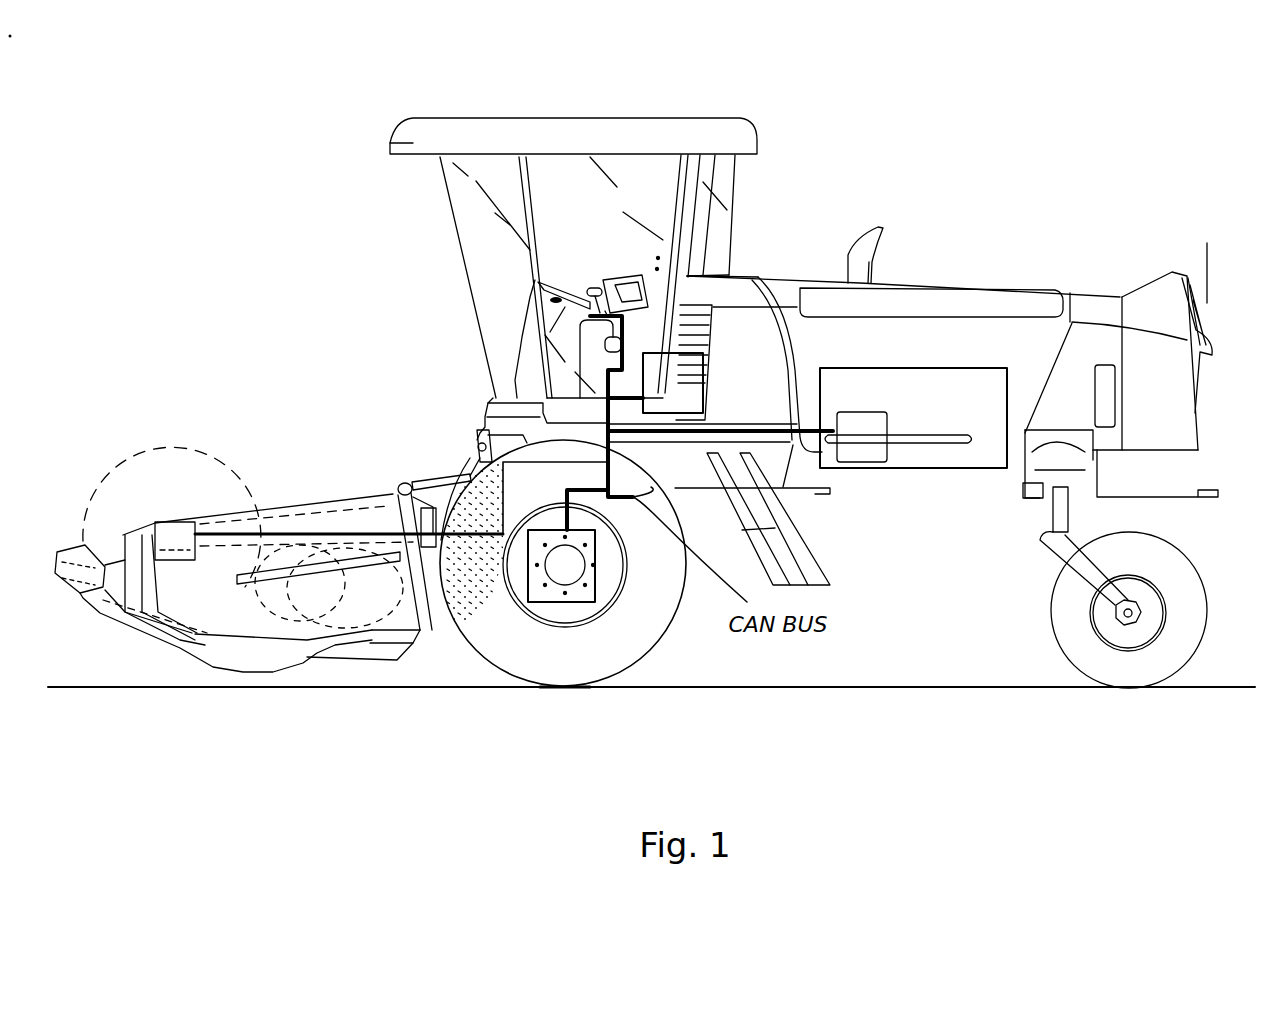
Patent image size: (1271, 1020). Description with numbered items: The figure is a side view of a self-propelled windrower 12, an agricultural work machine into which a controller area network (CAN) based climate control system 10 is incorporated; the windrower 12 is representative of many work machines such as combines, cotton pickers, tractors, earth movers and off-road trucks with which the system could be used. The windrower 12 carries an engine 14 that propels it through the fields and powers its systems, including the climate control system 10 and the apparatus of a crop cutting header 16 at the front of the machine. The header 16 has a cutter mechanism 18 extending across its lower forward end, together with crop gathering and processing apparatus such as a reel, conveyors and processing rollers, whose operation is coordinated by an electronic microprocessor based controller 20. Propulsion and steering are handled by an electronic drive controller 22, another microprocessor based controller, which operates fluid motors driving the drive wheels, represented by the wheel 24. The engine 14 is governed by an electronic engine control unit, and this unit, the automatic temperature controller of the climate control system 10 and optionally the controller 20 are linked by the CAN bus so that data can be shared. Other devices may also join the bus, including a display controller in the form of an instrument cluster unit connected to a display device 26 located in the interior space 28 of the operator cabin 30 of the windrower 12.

The CAN based climate control system 10 is at (700, 362).
The self-propelled windrower 12 is at (1177, 208).
The engine 14 is at (970, 367).
The crop cutting header 16 is at (398, 657).
The cutter mechanism 18 is at (293, 668).
The electronic microprocessor based controller 20 is at (177, 522).
The electronic drive controller 22 is at (553, 602).
The wheel 24 is at (663, 642).
The display device 26 is at (620, 275).
The interior space 28 is at (552, 195).
The operator cabin 30 is at (732, 182).